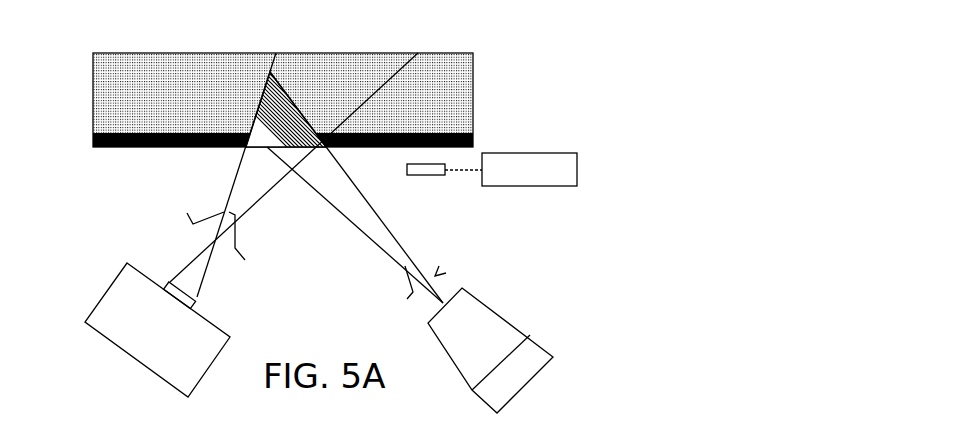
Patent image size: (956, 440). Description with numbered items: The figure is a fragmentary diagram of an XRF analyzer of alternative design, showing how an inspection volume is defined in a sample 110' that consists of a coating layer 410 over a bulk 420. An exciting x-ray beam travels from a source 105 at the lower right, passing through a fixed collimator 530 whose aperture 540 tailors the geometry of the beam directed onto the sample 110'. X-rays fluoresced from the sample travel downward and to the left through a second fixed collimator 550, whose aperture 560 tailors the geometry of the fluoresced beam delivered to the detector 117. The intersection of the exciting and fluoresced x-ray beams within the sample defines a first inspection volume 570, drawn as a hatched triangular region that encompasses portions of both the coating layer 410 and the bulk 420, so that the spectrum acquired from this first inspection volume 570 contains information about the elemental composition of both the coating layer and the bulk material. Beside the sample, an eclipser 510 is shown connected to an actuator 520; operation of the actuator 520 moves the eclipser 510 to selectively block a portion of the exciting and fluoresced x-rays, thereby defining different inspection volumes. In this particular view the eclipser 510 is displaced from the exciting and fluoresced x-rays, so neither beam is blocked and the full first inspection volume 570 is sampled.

The light source 105 is at (522, 392).
The detector 117 is at (138, 363).
The sample 110' is at (296, 97).
The coating layer 410 is at (473, 140).
The bulk 420 is at (455, 90).
The eclipser 510 is at (424, 177).
The actuator 520 is at (525, 187).
The fixed collimator 530 is at (436, 276).
The aperture 540 is at (405, 266).
The fixed collimator 550 is at (193, 224).
The aperture 560 is at (229, 212).
The first inspection volume 570 is at (280, 87).